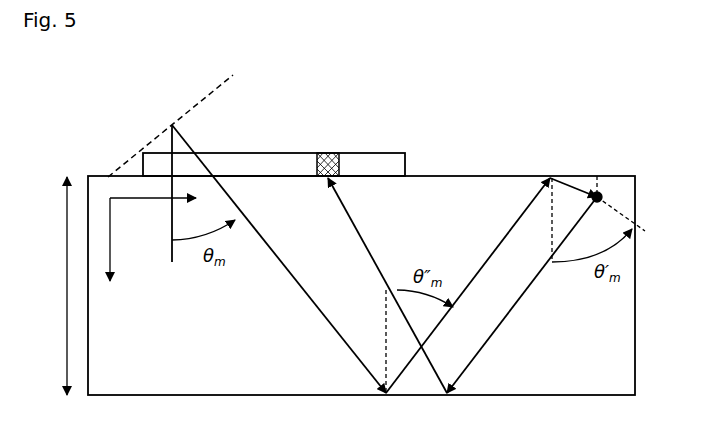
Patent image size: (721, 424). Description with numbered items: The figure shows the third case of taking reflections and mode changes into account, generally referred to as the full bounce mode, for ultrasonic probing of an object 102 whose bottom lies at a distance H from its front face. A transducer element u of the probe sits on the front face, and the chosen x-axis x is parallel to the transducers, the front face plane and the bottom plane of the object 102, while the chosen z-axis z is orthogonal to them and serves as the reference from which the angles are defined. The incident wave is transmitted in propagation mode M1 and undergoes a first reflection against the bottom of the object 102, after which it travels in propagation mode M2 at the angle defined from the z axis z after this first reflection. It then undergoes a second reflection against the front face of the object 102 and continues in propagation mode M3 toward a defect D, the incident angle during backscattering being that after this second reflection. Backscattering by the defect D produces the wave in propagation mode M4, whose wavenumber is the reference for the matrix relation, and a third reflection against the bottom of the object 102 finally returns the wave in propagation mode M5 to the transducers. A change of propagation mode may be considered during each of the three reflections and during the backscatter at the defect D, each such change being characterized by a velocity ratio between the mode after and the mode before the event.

The object 102 is at (246, 378).
The transducer element u is at (328, 153).
The x-axis of abscissa x is at (163, 202).
The z-axis of ordinates z is at (110, 256).
The propagation mode M1 is at (279, 259).
The propagation mode M2 is at (468, 285).
The propagation mode M3 is at (573, 198).
The propagation mode M4 is at (522, 295).
The propagation mode M5 is at (387, 285).
The defect D is at (601, 194).
The distance H is at (49, 286).